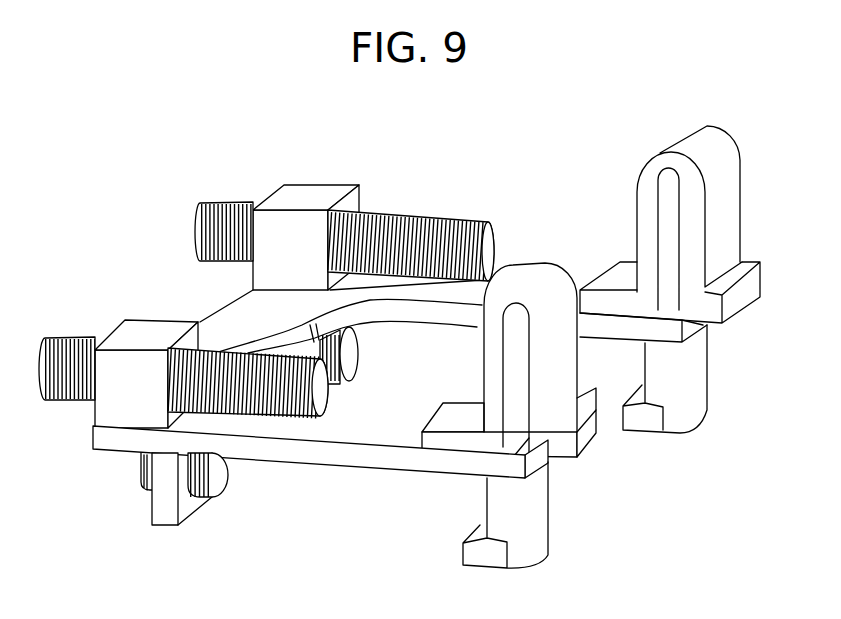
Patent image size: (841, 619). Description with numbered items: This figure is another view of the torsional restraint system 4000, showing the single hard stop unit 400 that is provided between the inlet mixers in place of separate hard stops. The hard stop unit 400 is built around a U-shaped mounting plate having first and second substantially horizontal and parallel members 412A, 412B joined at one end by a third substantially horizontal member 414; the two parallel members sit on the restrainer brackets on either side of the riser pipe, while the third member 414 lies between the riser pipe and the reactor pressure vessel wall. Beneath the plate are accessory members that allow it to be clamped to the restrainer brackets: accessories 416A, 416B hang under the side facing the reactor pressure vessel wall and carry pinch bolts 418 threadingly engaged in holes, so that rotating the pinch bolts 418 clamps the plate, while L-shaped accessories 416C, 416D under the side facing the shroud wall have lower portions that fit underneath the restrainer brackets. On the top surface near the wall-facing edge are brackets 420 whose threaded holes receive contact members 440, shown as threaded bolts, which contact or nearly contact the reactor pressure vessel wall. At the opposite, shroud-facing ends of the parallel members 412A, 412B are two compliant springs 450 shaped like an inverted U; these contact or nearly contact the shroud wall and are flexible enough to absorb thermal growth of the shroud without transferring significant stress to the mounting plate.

The torsional restraint system 4000 is at (408, 342).
The hard stop unit 400 is at (609, 311).
The first substantially horizontal member 412A is at (492, 273).
The second substantially horizontal member 412B is at (318, 470).
The third substantially horizontal member 414 is at (237, 297).
The accessory member 416A is at (200, 498).
The accessory member 416B is at (358, 380).
The L-shaped accessory member 416C is at (548, 516).
The L-shaped accessory member 416D is at (708, 371).
The pinch bolt 418 is at (133, 473).
The bracket 420 is at (317, 195).
The contact member 440 is at (230, 192).
The compliant spring 450 is at (733, 210).